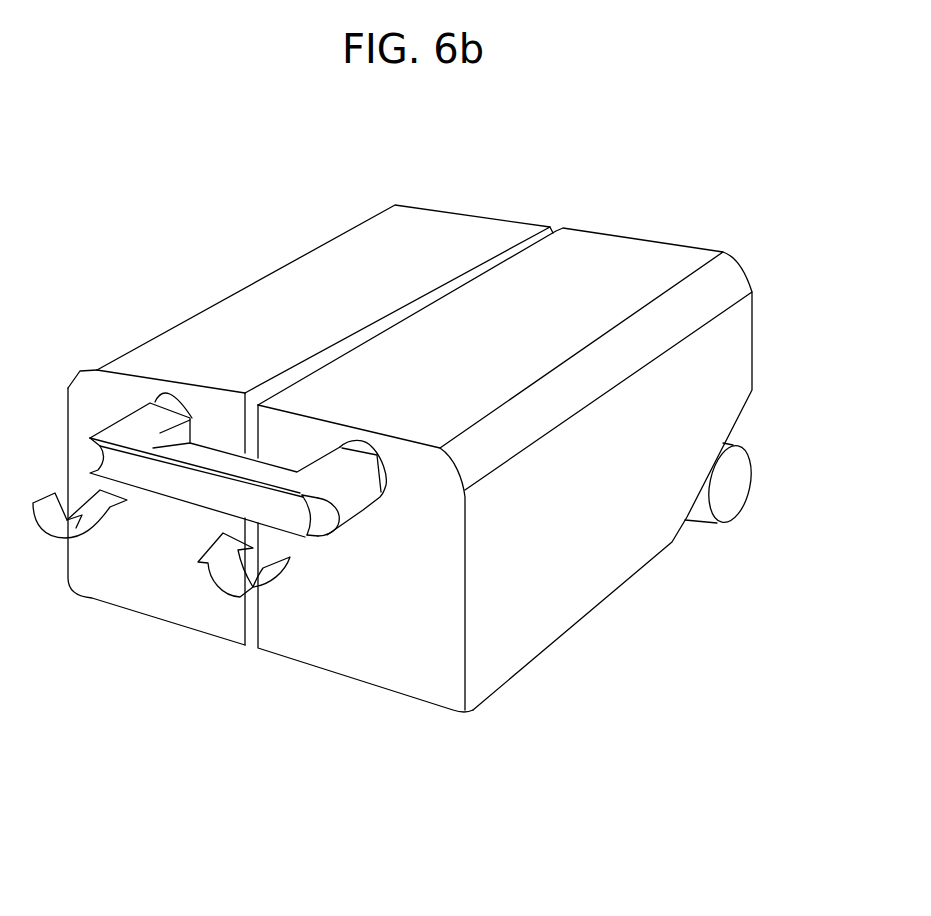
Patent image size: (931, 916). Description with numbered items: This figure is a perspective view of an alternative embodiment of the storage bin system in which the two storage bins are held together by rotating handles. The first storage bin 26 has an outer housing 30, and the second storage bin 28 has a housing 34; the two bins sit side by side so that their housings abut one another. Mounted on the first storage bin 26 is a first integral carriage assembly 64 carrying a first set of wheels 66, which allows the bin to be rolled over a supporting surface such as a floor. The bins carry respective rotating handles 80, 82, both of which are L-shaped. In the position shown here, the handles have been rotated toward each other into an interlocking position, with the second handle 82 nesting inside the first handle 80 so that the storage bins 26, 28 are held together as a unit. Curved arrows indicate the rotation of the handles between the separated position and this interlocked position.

The first storage bin 26 is at (330, 687).
The second storage bin 28 is at (148, 633).
The outer housing 30 is at (587, 557).
The housing 34 is at (306, 287).
The first integral carriage assembly 64 is at (755, 430).
The first set of wheels 66 is at (733, 493).
The first rotating handle 80 is at (215, 457).
The second rotating handle 82 is at (173, 488).